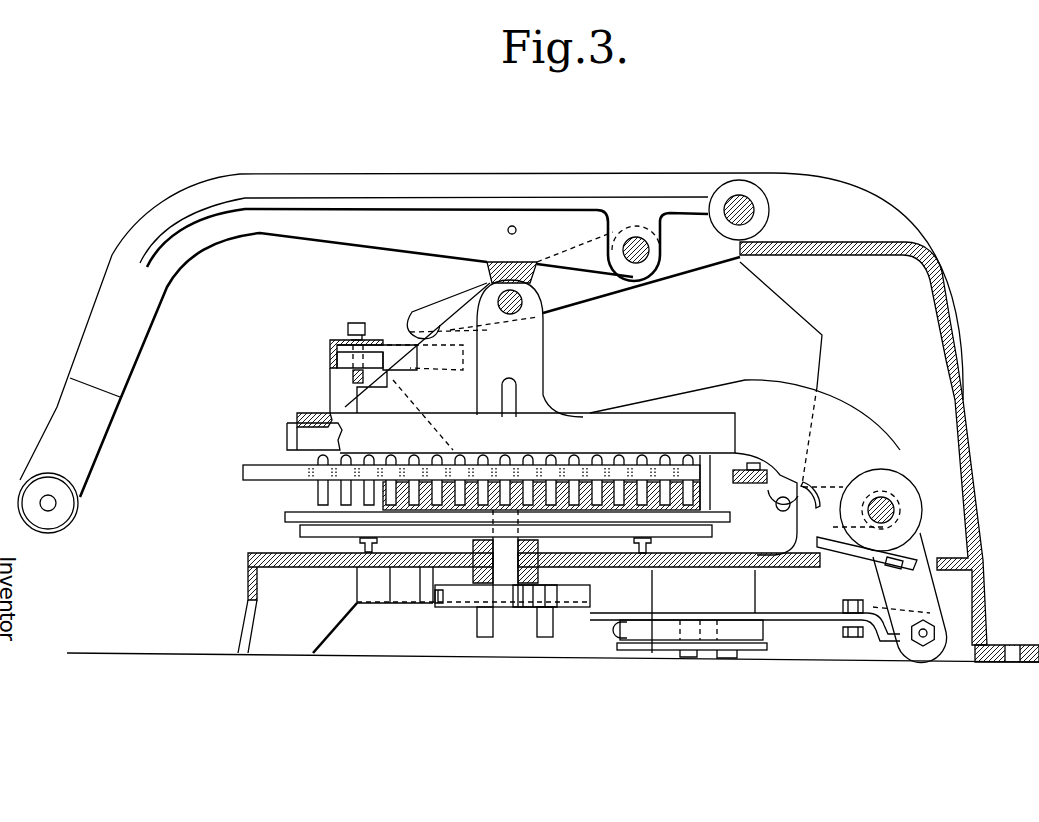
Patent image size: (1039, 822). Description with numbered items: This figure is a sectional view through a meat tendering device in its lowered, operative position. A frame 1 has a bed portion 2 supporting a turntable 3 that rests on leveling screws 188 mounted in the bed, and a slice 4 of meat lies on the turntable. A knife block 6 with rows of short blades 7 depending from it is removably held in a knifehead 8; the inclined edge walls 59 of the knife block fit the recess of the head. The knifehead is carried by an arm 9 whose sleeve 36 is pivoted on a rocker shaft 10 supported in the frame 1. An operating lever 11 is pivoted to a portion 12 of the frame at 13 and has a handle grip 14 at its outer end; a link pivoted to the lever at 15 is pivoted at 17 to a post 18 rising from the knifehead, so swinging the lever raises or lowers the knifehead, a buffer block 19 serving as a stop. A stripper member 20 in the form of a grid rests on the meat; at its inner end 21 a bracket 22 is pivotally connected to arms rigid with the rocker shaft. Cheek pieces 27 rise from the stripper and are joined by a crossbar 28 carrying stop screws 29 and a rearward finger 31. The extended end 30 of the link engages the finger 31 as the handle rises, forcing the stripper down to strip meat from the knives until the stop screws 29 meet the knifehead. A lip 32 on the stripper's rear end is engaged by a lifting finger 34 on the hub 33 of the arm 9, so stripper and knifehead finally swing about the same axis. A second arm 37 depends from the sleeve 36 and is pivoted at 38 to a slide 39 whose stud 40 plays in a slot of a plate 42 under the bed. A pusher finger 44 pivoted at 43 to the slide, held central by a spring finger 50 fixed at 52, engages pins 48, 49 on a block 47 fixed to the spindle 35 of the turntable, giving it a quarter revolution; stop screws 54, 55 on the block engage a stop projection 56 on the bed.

The frame 1 is at (970, 400).
The bed portion 2 is at (290, 567).
The turntable 3 is at (357, 523).
The slice of meat 4 is at (600, 505).
The knife block 6 is at (318, 434).
The blades 7 is at (345, 505).
The knifehead 8 is at (578, 430).
The arm 9 is at (749, 383).
The rocker shaft 10 is at (898, 494).
The operating lever 11 is at (428, 185).
The frame portion 12 is at (904, 238).
The lever pivot 13 is at (742, 205).
The handle grip 14 is at (77, 512).
The link pivot 15 is at (640, 245).
The post pivot 17 is at (523, 302).
The post 18 is at (527, 345).
The buffer block 19 is at (489, 270).
The stripper member 20 is at (285, 477).
The inner end of stripper 21 is at (757, 462).
The bracket 22 is at (776, 490).
The cheek pieces 27 is at (314, 395).
The crossbar 28 is at (328, 340).
The stop screws 29 is at (350, 325).
The link extension 30 is at (420, 318).
The finger 31 is at (404, 357).
The lip 32 is at (815, 484).
The hub 33 is at (913, 516).
The lifting finger 34 is at (822, 548).
The spindle 35 is at (440, 600).
The sleeve 36 is at (898, 505).
The second arm 37 is at (920, 590).
The arm pivot 38 is at (923, 640).
The slide 39 is at (825, 625).
The stud 40 is at (730, 645).
The plate 42 is at (678, 645).
The pusher finger pivot 43 is at (858, 635).
The pusher finger 44 is at (600, 620).
The block 47 is at (498, 572).
The pin 48 is at (548, 633).
The pin 49 is at (487, 633).
The spring finger 50 is at (672, 632).
The spring finger attachment 52 is at (620, 637).
The stop screw 54 is at (532, 620).
The stop screw 55 is at (430, 610).
The stop projection 56 is at (403, 598).
The edge walls 59 is at (312, 408).
The leveling screws 188 is at (352, 542).